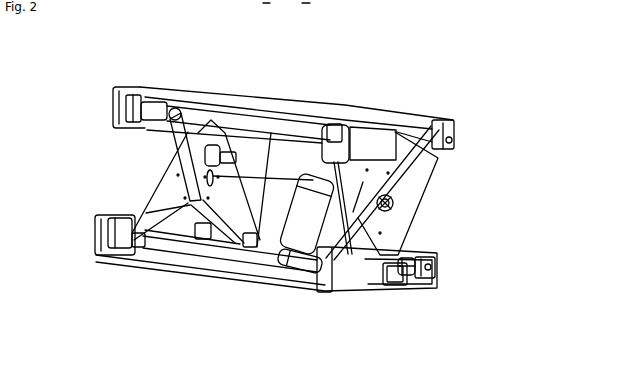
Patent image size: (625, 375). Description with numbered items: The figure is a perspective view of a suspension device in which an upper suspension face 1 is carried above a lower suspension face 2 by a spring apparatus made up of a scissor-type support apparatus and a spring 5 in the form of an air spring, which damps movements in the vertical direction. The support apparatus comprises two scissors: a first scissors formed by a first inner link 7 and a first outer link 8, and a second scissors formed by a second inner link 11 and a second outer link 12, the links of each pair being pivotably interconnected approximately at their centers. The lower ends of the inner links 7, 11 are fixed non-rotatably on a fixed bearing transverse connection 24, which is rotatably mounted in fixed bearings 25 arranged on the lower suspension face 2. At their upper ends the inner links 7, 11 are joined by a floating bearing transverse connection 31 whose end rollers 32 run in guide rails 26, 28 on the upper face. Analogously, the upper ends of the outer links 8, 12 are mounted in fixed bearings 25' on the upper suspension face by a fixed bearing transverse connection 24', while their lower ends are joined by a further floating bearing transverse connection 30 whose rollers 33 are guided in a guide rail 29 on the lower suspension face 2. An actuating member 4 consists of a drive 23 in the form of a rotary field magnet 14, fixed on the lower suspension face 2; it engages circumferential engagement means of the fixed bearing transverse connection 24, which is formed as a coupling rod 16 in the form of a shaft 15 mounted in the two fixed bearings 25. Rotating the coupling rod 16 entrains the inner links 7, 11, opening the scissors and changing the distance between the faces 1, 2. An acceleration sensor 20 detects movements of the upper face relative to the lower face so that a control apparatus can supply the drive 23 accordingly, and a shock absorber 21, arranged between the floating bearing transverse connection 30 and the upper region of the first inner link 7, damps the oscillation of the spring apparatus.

The upper suspension face 1 is at (313, 99).
The lower suspension face 2 is at (246, 276).
The actuating member 4 is at (306, 17).
The spring 5 is at (266, 190).
The first inner link 7 is at (388, 242).
The first outer link 8 is at (418, 170).
The second inner link 11 is at (178, 134).
The second outer link 12 is at (158, 194).
The rotary field magnet 14 is at (349, 268).
The shaft 15 is at (414, 258).
The coupling rod 16 is at (415, 258).
The acceleration sensor 20 is at (392, 279).
The shock absorber 21 is at (312, 268).
The drive 23 is at (349, 262).
The fixed bearing transverse connection 24 is at (468, 243).
The fixed bearing transverse connection 24' is at (457, 111).
The fixed bearings 25 is at (452, 261).
The fixed bearings 25' is at (473, 131).
The guide rail 26 is at (362, 140).
The guide rail 28 is at (115, 98).
The guide rail 29 is at (100, 235).
The floating bearing transverse connection 30 is at (210, 250).
The floating bearing transverse connection 31 is at (241, 102).
The rollers 32 is at (137, 116).
The rollers 33 is at (104, 255).